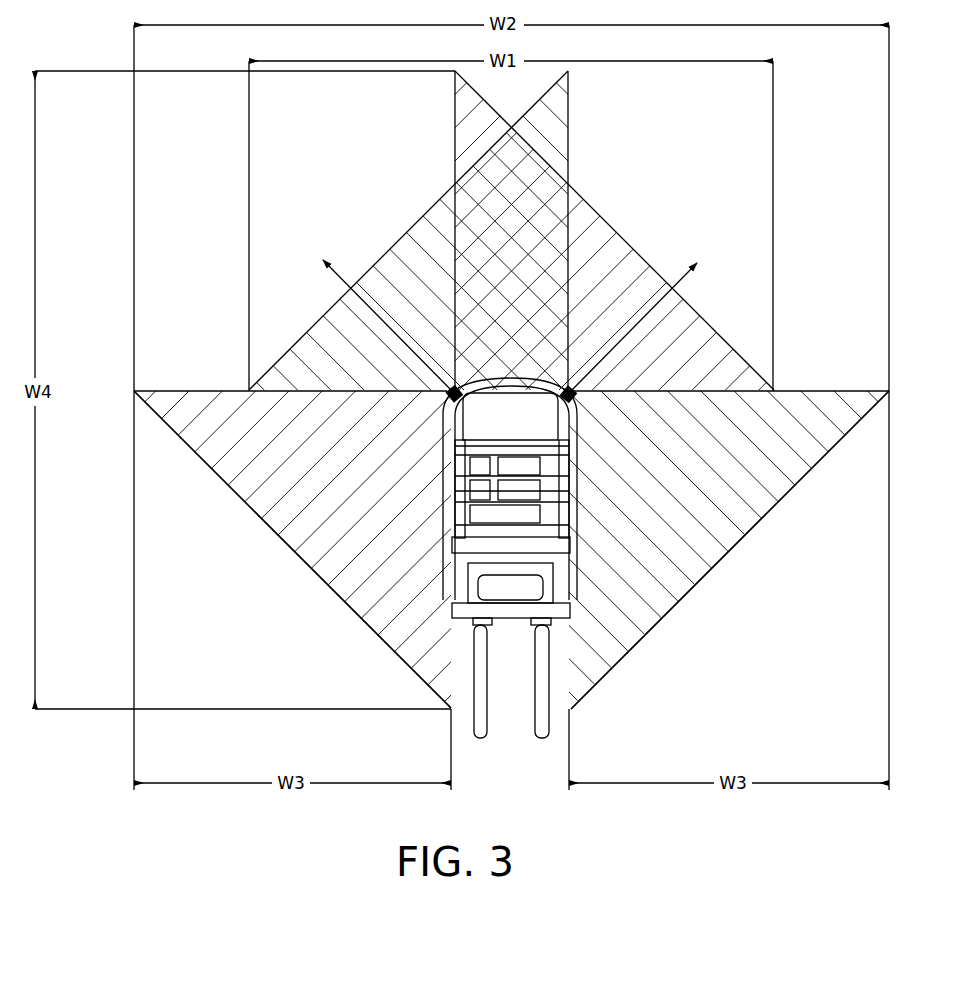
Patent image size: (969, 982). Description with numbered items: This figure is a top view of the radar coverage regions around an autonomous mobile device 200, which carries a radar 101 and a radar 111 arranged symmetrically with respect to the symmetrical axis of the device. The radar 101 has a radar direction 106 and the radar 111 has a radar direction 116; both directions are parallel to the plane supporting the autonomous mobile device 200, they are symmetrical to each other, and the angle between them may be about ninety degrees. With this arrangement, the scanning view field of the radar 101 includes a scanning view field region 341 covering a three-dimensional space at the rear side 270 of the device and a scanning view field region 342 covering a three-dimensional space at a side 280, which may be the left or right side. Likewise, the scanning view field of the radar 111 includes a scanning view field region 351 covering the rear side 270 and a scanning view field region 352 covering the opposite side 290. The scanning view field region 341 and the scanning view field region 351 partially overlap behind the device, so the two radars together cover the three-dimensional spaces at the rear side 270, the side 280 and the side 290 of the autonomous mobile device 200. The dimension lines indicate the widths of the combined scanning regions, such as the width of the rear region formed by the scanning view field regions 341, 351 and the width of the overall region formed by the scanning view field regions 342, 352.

The scanning view field region 351 is at (402, 245).
The scanning view field region 341 is at (617, 245).
The rear side 270 is at (493, 278).
The side 280 is at (351, 510).
The side 290 is at (640, 510).
The scanning view field region 342 is at (327, 565).
The scanning view field region 352 is at (698, 570).
The radar direction 106 is at (372, 311).
The radar direction 116 is at (650, 312).
The autonomous mobile device 200 is at (495, 425).
The radar 101 is at (446, 418).
The radar 111 is at (575, 404).